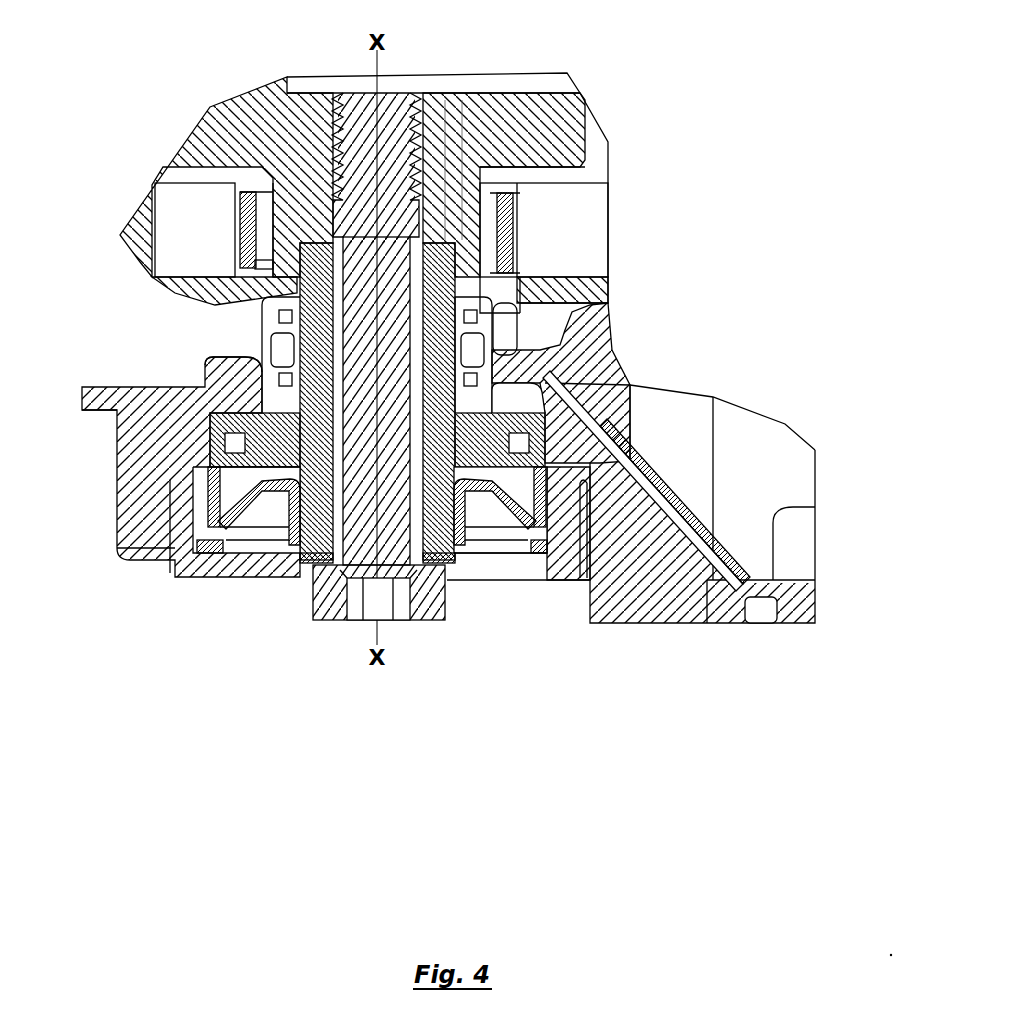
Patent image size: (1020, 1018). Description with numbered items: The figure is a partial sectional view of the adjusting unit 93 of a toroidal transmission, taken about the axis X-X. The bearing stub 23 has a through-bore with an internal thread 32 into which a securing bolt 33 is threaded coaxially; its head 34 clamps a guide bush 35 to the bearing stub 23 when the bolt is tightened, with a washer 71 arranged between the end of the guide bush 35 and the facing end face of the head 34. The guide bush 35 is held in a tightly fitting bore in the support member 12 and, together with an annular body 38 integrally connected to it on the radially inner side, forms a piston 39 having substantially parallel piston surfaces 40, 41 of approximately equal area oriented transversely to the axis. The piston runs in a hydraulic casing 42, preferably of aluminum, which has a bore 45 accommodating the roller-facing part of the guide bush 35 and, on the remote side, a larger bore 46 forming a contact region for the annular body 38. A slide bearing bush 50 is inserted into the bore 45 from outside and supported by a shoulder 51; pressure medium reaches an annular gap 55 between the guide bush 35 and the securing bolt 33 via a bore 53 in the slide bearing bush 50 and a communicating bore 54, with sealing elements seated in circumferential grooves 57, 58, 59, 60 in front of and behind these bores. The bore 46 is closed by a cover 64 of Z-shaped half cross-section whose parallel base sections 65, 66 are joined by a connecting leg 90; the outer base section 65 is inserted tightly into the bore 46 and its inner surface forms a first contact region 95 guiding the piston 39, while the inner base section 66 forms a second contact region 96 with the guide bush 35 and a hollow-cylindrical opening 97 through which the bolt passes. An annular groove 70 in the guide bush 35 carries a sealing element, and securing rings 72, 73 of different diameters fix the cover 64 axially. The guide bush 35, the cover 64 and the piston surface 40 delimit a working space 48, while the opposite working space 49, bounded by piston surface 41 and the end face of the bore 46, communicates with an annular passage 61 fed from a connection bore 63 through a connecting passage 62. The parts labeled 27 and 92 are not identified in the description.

The support member 12 is at (553, 110).
The bearing stub 23 is at (453, 130).
The cap body lower face 27 is at (585, 218).
The internal thread 32 is at (446, 215).
The securing bolt 33 is at (357, 112).
The head 34 is at (322, 603).
The guide bush 35 is at (368, 438).
The annular body 38 is at (565, 428).
The piston 39 is at (153, 497).
The piston surface 40 is at (110, 477).
The piston surface 41 is at (107, 423).
The hydraulic casing 42 is at (642, 598).
The bore 45 is at (532, 352).
The bore 46 is at (586, 582).
The working space 48 is at (490, 478).
The working space 49 is at (548, 366).
The slide bearing bush 50 is at (540, 282).
The shoulder 51 is at (207, 393).
The bore 53 is at (520, 340).
The bore 54 is at (520, 312).
The annular gap 55 is at (412, 300).
The circumferential groove 57 is at (250, 296).
The circumferential groove 58 is at (222, 337).
The circumferential groove 59 is at (225, 289).
The circumferential groove 60 is at (222, 357).
The annular passage 61 is at (552, 382).
The connecting passage 62 is at (703, 573).
The connection bore 63 is at (760, 615).
The cover 64 is at (245, 520).
The base section 65 is at (545, 385).
The base section 66 is at (460, 552).
The annular groove 70 is at (280, 537).
The washer 71 is at (303, 520).
The securing ring 72 is at (506, 563).
The securing ring 73 is at (548, 560).
The connecting leg 90 is at (496, 512).
The cavity 92 is at (578, 225).
The adjusting unit 93 is at (830, 477).
The first contact region 95 is at (107, 452).
The second contact region 96 is at (317, 567).
The opening 97 is at (416, 567).